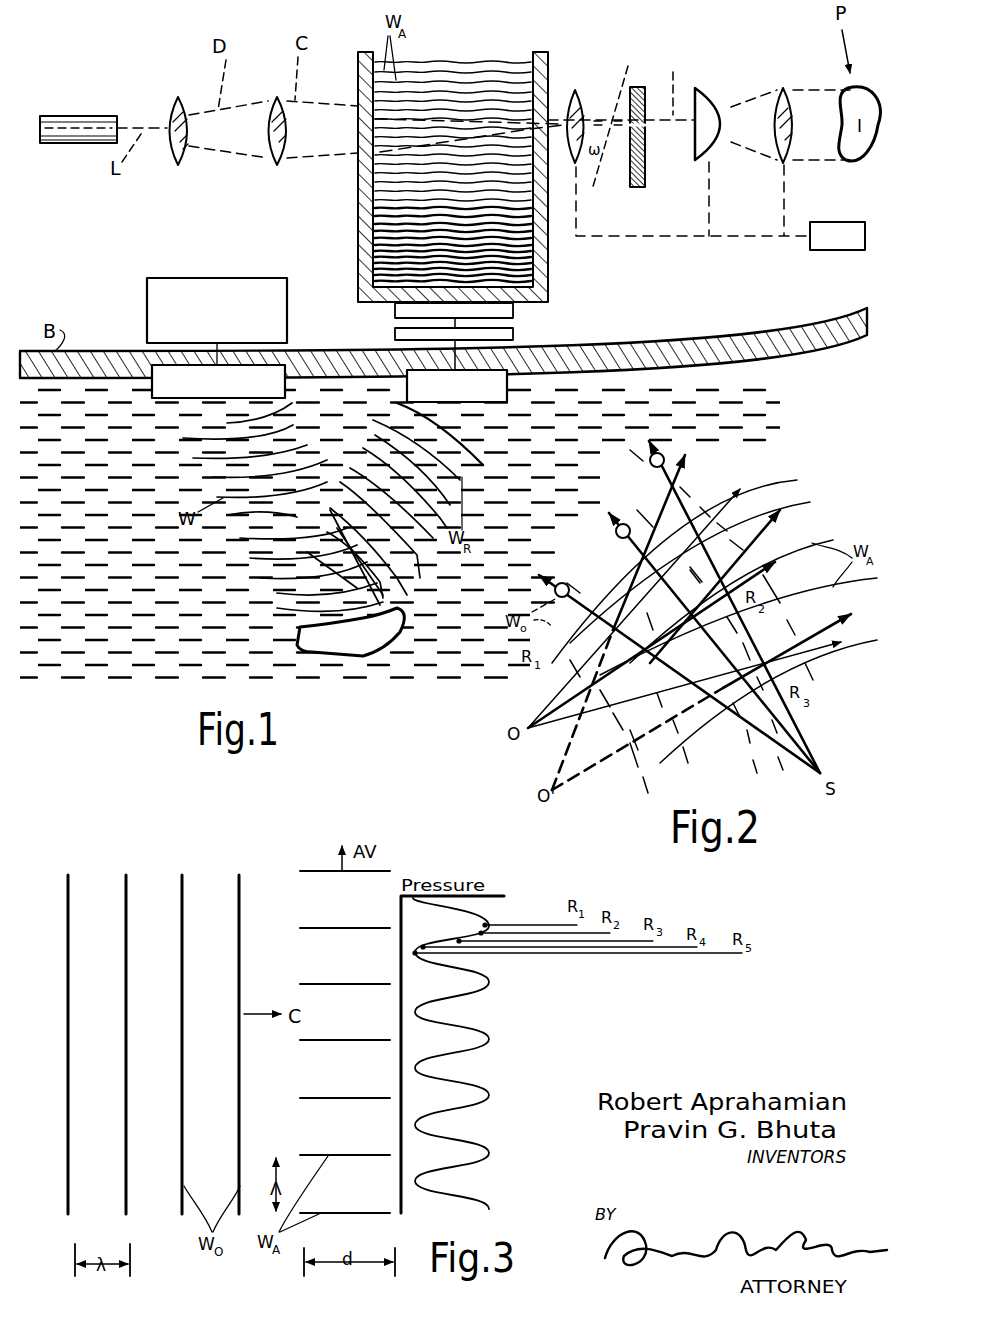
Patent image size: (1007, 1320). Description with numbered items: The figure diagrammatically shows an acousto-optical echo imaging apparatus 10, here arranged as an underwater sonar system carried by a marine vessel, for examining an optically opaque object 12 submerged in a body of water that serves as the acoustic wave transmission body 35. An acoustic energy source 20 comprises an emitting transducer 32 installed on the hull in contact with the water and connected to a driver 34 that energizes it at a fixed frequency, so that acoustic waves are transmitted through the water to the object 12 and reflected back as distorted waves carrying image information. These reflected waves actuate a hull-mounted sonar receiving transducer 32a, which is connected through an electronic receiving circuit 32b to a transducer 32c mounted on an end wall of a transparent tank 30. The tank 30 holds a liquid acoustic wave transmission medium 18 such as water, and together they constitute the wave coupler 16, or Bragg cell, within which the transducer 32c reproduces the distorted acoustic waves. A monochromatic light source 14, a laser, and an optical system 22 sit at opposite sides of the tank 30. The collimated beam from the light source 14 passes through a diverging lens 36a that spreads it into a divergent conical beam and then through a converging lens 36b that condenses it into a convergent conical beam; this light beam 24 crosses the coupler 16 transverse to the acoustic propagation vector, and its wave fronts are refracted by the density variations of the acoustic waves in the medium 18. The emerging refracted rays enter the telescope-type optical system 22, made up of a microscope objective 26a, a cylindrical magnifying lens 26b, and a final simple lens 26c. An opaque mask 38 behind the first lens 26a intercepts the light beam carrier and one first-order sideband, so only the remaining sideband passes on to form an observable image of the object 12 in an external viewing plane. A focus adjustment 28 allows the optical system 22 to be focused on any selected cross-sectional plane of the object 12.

The acousto-optical echo imaging apparatus 10 is at (190, 234).
The object 12 is at (340, 645).
The monochromatic light source 14 is at (78, 116).
The wave coupler 16 is at (557, 60).
The acoustic wave transmission medium 18 is at (460, 62).
The acoustic energy source 20 is at (138, 358).
The optical system 22 is at (651, 60).
The light beam 24 is at (337, 98).
The microscope objective 26a is at (580, 97).
The cylindrical magnifying lens 26b is at (702, 88).
The final simple lens 26c is at (801, 60).
The focus adjustment 28 is at (866, 250).
The tank 30 is at (358, 220).
The transducer 32 is at (218, 381).
The sonar receiving transducer 32a is at (457, 386).
The electronic receiving circuit 32b is at (513, 333).
The transducer 32c is at (513, 310).
The driver 34 is at (217, 310).
The acoustic wave transmission body 35 is at (128, 642).
The diverging lens 36a is at (183, 165).
The converging lens 36b is at (276, 163).
The opaque mask 38 is at (646, 188).